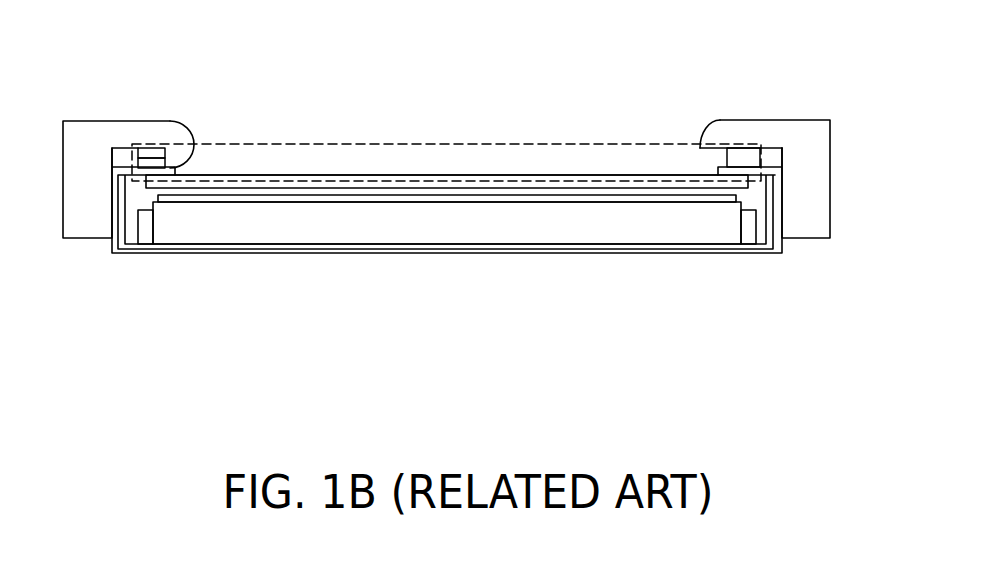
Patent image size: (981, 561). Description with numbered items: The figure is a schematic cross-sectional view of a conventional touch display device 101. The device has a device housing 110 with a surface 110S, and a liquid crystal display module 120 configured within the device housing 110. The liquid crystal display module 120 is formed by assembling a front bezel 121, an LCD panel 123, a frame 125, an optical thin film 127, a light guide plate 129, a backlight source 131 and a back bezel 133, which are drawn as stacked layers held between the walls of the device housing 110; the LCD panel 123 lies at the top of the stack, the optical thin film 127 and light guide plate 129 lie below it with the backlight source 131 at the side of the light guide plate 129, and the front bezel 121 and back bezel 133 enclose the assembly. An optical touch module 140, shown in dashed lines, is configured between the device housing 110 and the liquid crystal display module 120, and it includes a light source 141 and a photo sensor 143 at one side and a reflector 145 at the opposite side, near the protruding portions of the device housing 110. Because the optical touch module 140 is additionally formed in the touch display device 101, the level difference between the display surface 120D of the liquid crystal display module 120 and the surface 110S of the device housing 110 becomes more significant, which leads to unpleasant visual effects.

The touch display device 101 is at (790, 357).
The device housing 110 is at (90, 235).
The surface of the device housing 110S is at (124, 110).
The liquid crystal display module 120 is at (441, 263).
The display surface 120D is at (571, 164).
The front bezel 121 is at (114, 247).
The LCD panel 123 is at (346, 187).
The frame 125 is at (131, 240).
The optical thin film 127 is at (410, 201).
The light guide plate 129 is at (283, 226).
The backlight source 131 is at (189, 268).
The back bezel 133 is at (478, 252).
The optical touch module 140 is at (420, 142).
The light source 141 is at (156, 164).
The photo sensor 143 is at (148, 155).
The reflector 145 is at (742, 160).